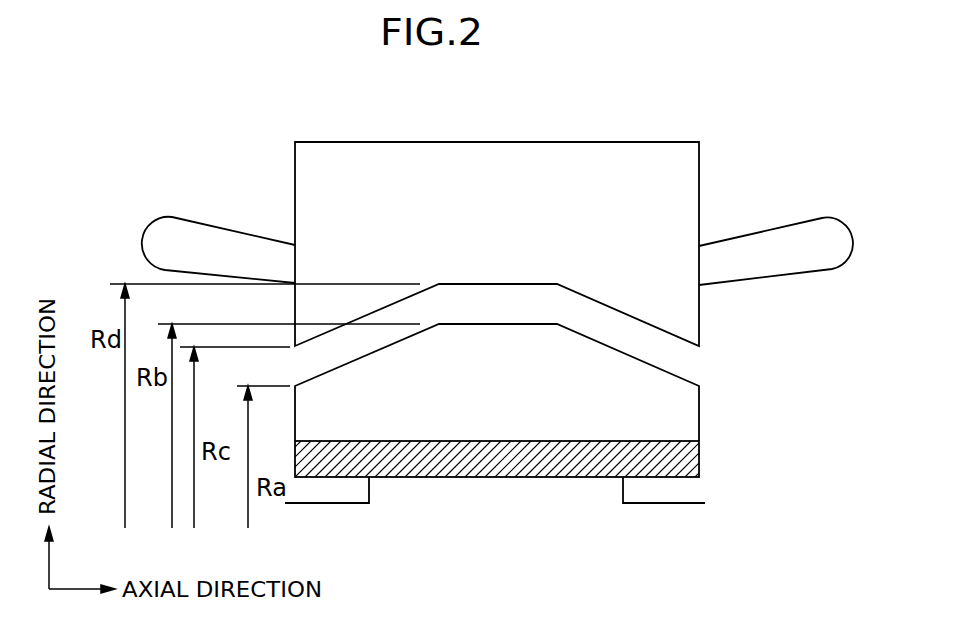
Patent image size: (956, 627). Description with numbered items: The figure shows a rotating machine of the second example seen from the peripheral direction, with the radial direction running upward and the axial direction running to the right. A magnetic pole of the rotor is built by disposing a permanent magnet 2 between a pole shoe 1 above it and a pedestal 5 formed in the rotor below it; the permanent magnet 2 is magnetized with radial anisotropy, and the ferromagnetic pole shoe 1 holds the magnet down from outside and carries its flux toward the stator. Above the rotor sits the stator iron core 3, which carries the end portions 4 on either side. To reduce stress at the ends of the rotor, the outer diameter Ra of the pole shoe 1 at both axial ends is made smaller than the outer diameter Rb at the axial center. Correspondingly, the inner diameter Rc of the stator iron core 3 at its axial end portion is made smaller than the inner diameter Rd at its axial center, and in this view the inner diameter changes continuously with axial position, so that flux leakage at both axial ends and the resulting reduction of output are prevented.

The pole shoe 1 is at (686, 414).
The permanent magnet 2 is at (692, 458).
The stator iron core 3 is at (497, 154).
The flap / fin portion 4 is at (759, 246).
The pedestal 5 is at (496, 487).